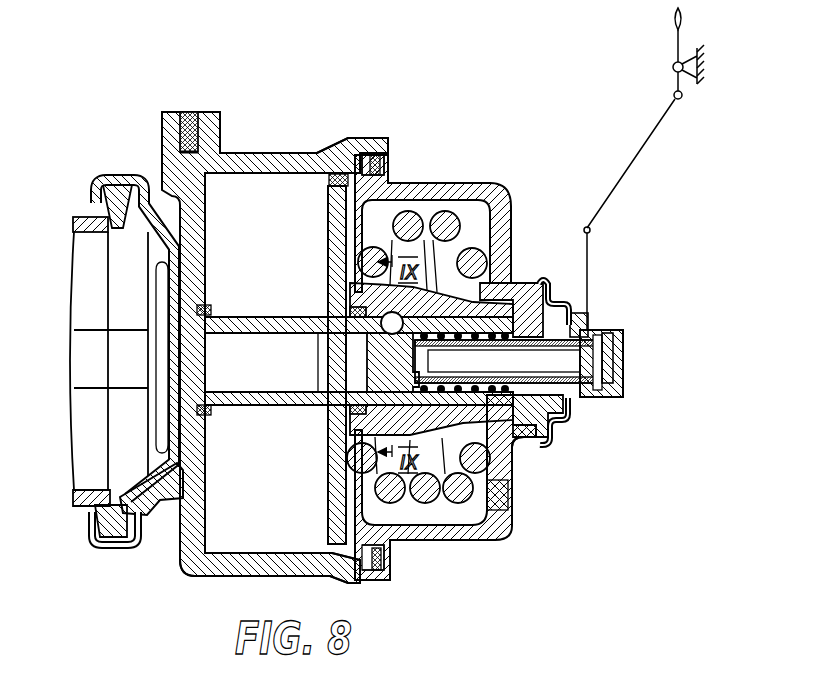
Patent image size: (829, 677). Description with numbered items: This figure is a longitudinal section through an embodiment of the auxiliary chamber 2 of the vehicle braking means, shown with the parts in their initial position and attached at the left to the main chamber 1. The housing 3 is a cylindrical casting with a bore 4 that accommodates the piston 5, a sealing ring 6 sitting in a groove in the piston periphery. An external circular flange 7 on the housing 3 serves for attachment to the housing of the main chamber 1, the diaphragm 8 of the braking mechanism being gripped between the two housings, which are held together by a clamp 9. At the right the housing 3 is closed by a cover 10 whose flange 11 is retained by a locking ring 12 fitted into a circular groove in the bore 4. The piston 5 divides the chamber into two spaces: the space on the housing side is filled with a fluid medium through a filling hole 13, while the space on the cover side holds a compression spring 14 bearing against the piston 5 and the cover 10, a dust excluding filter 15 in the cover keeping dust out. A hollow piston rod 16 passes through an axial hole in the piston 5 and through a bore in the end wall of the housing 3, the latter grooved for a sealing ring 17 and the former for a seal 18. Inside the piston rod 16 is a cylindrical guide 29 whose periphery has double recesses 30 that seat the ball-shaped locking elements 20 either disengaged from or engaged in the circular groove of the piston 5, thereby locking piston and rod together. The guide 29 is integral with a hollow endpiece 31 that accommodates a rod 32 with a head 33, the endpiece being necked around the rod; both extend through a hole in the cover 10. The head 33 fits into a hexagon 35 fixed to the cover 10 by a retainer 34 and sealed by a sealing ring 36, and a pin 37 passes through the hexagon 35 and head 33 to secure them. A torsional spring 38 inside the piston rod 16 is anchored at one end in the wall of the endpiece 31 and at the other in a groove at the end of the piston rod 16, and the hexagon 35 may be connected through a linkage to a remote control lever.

The main chamber 1 is at (80, 216).
The auxiliary chamber 2 is at (200, 577).
The housing 3 is at (163, 158).
The bore 4 is at (272, 174).
The piston 5 is at (328, 249).
The sealing ring 6 is at (329, 182).
The external circular flange 7 is at (152, 508).
The diaphragm 8 is at (138, 482).
The clamp 9 is at (110, 549).
The cover 10 is at (506, 216).
The flange 11 is at (381, 562).
The locking ring 12 is at (375, 153).
The filling hole 13 is at (196, 112).
The compression spring 14 is at (444, 214).
The dust excluding filter 15 is at (508, 512).
The hollow piston rod 16 is at (250, 317).
The sealing ring 17 is at (207, 305).
The seal 18 is at (345, 312).
The locking elements 20 is at (381, 340).
The guide 29 is at (367, 372).
The double recesses 30 is at (352, 411).
The hollow endpiece 31 is at (548, 445).
The rod 32 is at (580, 397).
The head 33 is at (613, 369).
The retainer 34 is at (544, 281).
The hexagon 35 is at (615, 330).
The sealing ring 36 is at (558, 430).
The pin 37 is at (604, 396).
The torsional spring 38 is at (524, 440).